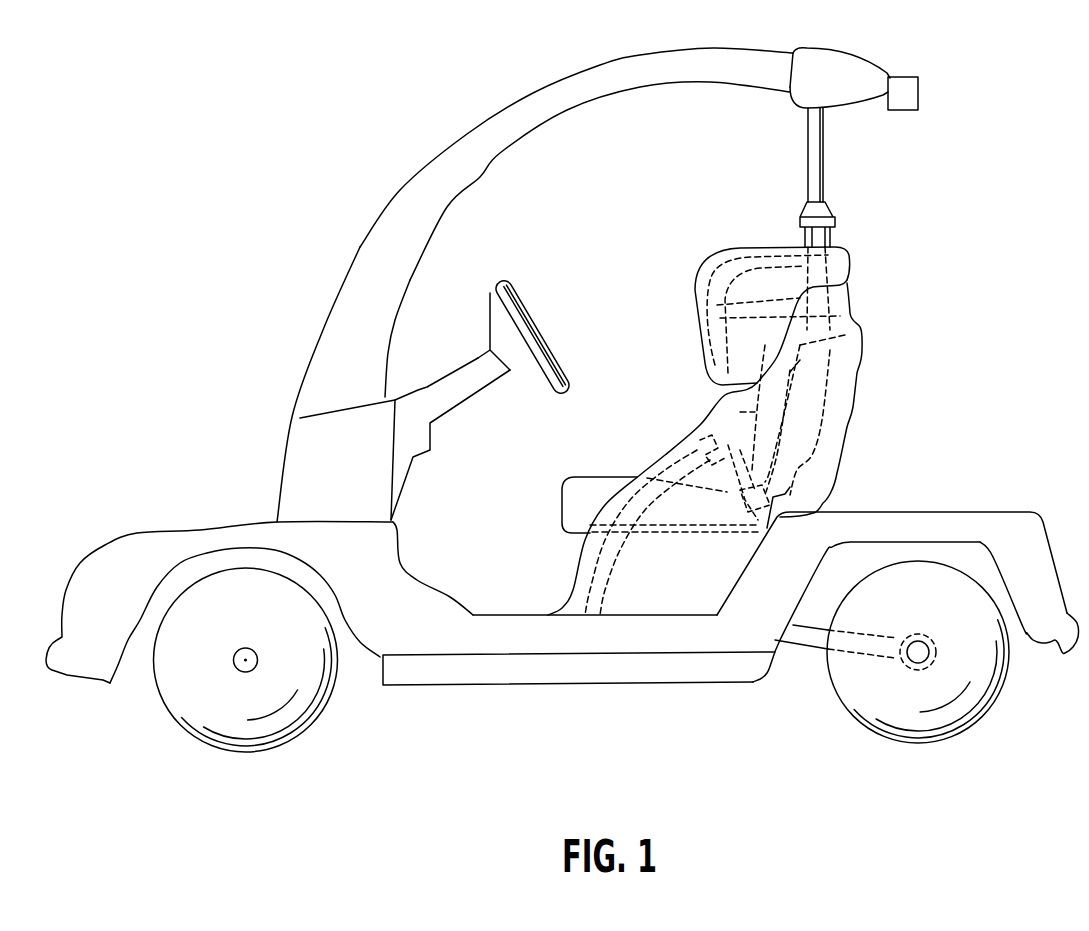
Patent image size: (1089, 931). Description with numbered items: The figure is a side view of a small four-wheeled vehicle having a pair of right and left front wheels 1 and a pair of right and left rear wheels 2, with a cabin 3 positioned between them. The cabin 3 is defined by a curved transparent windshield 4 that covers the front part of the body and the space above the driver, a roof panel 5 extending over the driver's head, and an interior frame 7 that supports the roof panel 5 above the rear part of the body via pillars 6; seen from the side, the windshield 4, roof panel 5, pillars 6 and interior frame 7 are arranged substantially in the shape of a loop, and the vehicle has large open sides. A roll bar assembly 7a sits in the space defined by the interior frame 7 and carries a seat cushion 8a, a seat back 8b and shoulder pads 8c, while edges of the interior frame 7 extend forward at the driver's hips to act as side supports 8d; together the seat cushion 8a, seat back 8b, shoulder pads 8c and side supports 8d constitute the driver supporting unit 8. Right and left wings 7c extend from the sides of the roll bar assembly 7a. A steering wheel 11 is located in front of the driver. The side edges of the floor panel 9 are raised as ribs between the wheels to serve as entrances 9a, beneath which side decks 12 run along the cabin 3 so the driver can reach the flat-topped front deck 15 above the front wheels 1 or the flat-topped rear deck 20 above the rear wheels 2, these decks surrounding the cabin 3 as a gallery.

The front wheels 1 is at (270, 730).
The rear wheels 2 is at (973, 697).
The cabin 3 is at (421, 135).
The windshield 4 is at (360, 247).
The roof panel 5 is at (860, 77).
The pillars 6 is at (823, 158).
The interior frame 7 is at (852, 422).
The roll bar assembly 7a is at (690, 432).
The wings 7c is at (693, 305).
The driver supporting unit 8 is at (545, 495).
The seat cushion 8a is at (592, 477).
The seat back 8b is at (830, 350).
The shoulder pads 8c is at (711, 231).
The side supports 8d is at (665, 463).
The floor panel 9 is at (537, 617).
The entrances 9a is at (490, 613).
The steering wheel 11 is at (518, 297).
The side decks 12 is at (520, 650).
The front deck 15 is at (133, 537).
The rear deck 20 is at (932, 512).